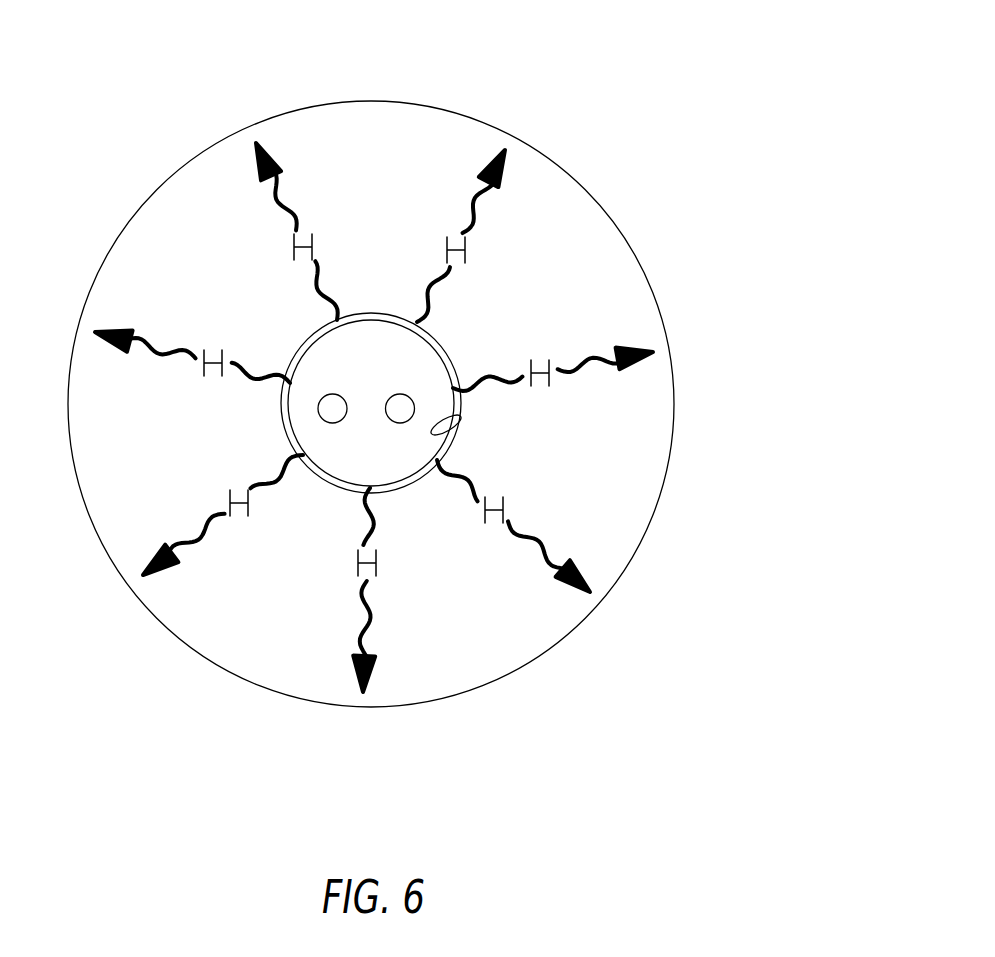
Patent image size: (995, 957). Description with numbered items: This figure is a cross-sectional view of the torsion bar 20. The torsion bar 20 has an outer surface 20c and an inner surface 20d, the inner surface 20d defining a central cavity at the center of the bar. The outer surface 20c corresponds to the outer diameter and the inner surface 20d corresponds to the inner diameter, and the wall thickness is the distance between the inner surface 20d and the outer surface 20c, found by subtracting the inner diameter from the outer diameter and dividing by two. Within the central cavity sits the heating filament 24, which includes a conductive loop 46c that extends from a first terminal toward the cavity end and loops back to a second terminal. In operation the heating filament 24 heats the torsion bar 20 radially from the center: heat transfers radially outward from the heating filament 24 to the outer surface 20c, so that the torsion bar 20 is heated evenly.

The torsion bar 20 is at (556, 85).
The outer surface 20c is at (587, 187).
The inner surface 20d is at (443, 350).
The conductive loop 46c is at (386, 403).
The heating filament 24 is at (460, 435).